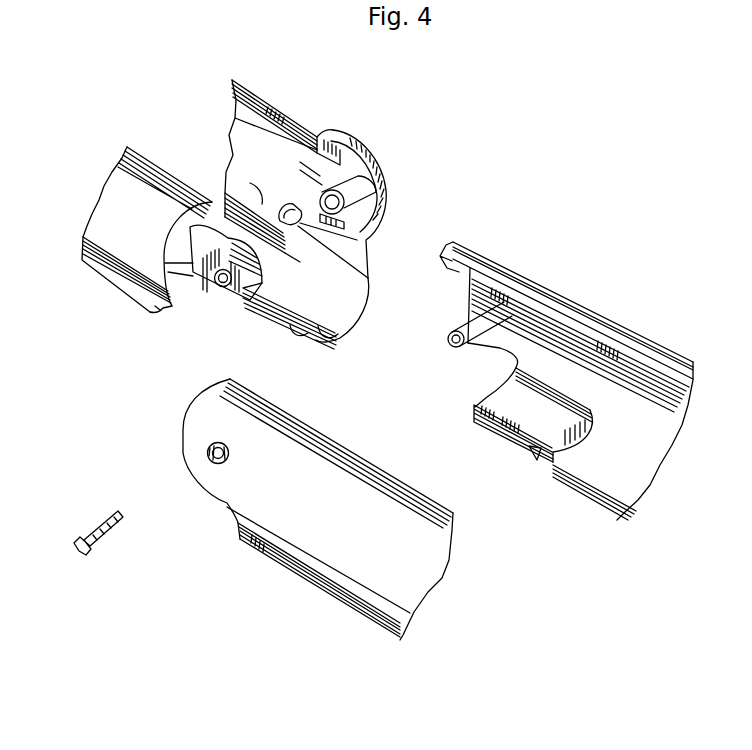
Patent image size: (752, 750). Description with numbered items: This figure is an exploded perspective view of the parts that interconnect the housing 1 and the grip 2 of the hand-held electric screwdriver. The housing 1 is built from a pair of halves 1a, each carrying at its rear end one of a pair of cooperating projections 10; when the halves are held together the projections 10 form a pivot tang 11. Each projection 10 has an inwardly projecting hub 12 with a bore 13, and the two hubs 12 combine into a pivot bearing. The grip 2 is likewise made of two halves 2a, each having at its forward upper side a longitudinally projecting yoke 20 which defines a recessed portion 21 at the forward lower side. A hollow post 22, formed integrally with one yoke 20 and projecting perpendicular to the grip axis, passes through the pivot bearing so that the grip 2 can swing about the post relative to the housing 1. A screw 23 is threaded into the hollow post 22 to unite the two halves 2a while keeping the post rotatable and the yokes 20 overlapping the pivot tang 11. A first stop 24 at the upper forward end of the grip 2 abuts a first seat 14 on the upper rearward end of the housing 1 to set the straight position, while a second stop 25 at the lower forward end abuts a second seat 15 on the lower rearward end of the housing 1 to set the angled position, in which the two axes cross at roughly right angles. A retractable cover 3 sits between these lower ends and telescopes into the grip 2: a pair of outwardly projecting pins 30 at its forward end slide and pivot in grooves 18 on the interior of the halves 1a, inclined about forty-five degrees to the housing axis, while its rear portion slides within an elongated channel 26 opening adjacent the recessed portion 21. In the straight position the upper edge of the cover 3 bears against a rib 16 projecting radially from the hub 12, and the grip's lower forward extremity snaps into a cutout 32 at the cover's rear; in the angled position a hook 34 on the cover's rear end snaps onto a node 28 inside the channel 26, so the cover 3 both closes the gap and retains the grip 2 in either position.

The housing 1 is at (100, 283).
The housing half 1a is at (127, 226).
The grip 2 is at (320, 595).
The grip half 2a is at (622, 345).
The retractable cover 3 is at (335, 307).
The projection 10 is at (183, 293).
The pivot tang 11 is at (388, 185).
The hub 12 is at (367, 190).
The bore 13 is at (221, 288).
The first seat 14 is at (328, 130).
The second seat 15 is at (155, 305).
The rib 16 is at (343, 218).
The groove 18 is at (250, 183).
The yoke 20 is at (215, 490).
The recessed portion 21 is at (503, 350).
The hollow post 22 is at (503, 312).
The screw 23 is at (79, 556).
The first stop 24 is at (435, 247).
The second stop 25 is at (471, 421).
The channel 26 is at (510, 440).
The node 28 is at (535, 462).
The pin 30 is at (301, 198).
The cutout 32 is at (296, 333).
The hook 34 is at (327, 334).